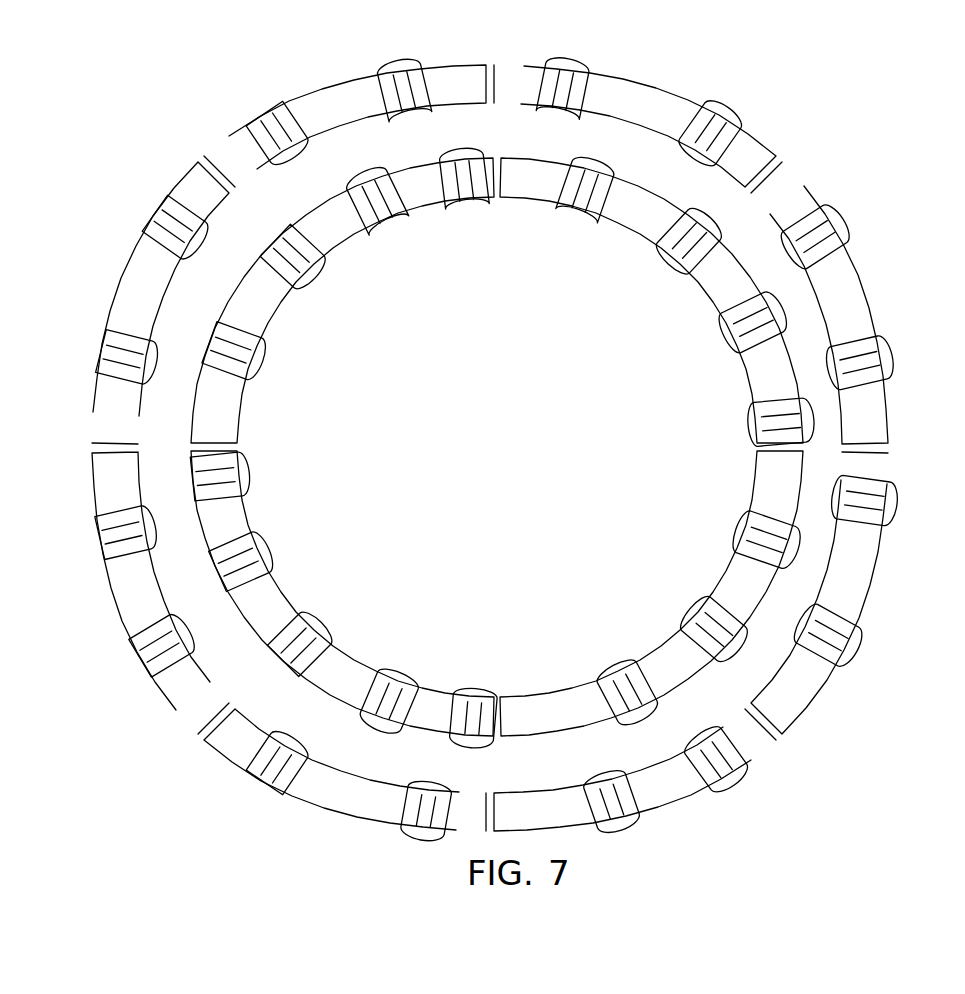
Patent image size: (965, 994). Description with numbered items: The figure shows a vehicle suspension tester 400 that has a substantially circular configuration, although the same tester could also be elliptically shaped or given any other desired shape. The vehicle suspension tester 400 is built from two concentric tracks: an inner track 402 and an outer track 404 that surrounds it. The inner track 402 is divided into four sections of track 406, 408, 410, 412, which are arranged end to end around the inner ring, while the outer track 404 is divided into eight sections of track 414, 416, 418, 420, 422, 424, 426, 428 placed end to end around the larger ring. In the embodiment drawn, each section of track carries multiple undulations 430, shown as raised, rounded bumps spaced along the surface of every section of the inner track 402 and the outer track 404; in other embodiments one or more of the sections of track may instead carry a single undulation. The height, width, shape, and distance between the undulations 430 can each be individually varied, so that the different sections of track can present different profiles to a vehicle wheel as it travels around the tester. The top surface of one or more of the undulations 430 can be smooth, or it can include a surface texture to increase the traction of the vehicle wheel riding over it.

The vehicle suspension tester 400 is at (163, 137).
The inner track 402 is at (670, 296).
The outer track 404 is at (822, 156).
The section of track 406 is at (653, 226).
The section of track 408 is at (688, 671).
The section of track 410 is at (362, 690).
The section of track 412 is at (272, 306).
The section of track 414 is at (651, 111).
The section of track 416 is at (861, 302).
The section of track 418 is at (875, 564).
The section of track 420 is at (692, 787).
The section of track 422 is at (364, 805).
The section of track 424 is at (149, 608).
The section of track 426 is at (158, 297).
The section of track 428 is at (354, 116).
The undulation 430 is at (293, 150).